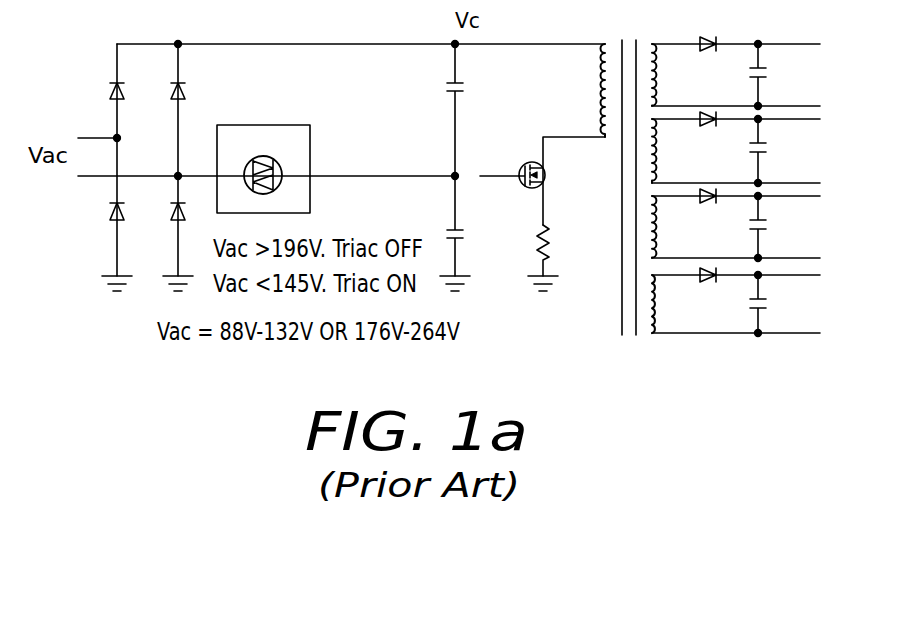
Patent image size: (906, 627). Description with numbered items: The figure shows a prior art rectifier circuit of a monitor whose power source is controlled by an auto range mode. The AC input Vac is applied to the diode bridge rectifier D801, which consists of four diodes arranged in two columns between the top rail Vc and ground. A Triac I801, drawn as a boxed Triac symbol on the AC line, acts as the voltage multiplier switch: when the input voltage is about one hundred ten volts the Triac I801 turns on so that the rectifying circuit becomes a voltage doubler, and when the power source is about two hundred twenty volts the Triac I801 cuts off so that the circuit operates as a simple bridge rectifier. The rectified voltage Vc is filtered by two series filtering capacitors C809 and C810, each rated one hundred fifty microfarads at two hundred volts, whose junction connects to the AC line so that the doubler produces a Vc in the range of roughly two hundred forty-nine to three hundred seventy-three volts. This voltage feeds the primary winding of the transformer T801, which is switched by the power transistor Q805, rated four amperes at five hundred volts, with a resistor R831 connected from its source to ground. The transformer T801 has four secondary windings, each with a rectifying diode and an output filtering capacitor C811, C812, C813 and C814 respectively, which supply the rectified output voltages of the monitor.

The bridge rectifier D801 is at (147, 143).
The Triac I801 is at (263, 154).
The filtering capacitor C809 is at (423, 110).
The filtering capacitor C810 is at (487, 226).
The power transistor Q805 is at (565, 181).
The resistor R831 is at (574, 250).
The transformer T801 is at (626, 169).
The output capacitor C811 is at (736, 73).
The output capacitor C812 is at (736, 149).
The output capacitor C813 is at (736, 225).
The output capacitor C814 is at (736, 302).